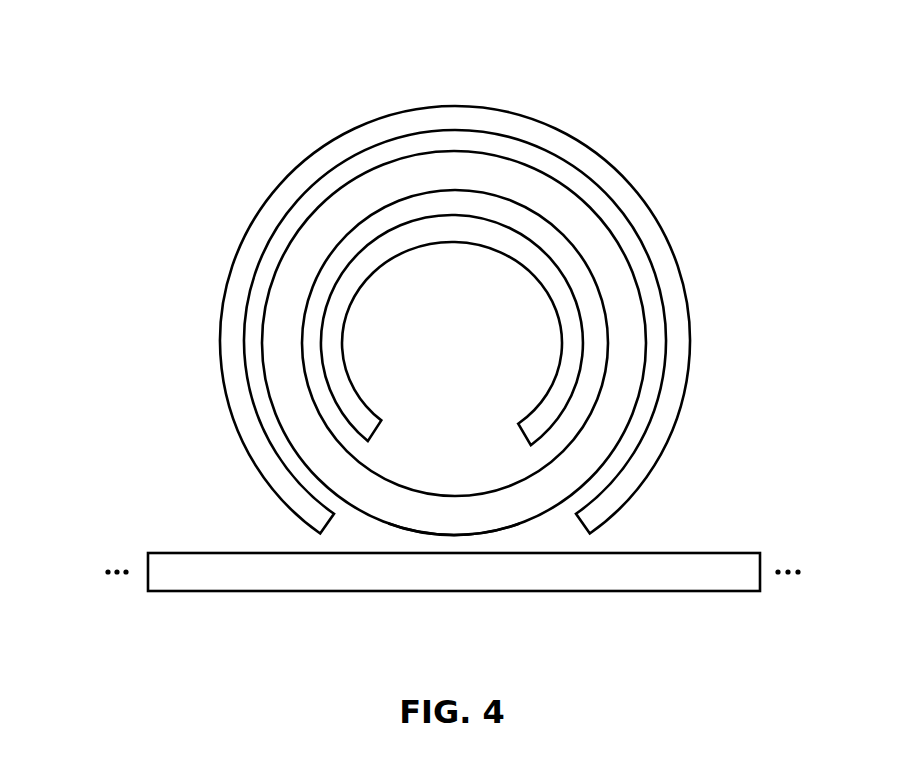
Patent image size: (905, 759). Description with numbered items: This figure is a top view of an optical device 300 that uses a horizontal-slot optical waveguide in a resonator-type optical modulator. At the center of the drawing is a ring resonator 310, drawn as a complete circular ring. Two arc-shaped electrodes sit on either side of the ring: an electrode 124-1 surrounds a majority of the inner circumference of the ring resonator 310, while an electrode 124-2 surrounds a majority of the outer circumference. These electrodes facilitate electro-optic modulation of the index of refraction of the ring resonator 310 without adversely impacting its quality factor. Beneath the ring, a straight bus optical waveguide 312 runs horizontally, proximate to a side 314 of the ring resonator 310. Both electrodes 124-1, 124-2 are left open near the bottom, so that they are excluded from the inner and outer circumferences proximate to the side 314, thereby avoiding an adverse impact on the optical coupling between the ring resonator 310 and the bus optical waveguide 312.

The optical device 300 is at (215, 82).
The electrode 124-1 is at (564, 310).
The electrode 124-2 is at (663, 427).
The ring resonator 310 is at (440, 510).
The bus optical waveguide 312 is at (167, 592).
The side 314 is at (460, 533).